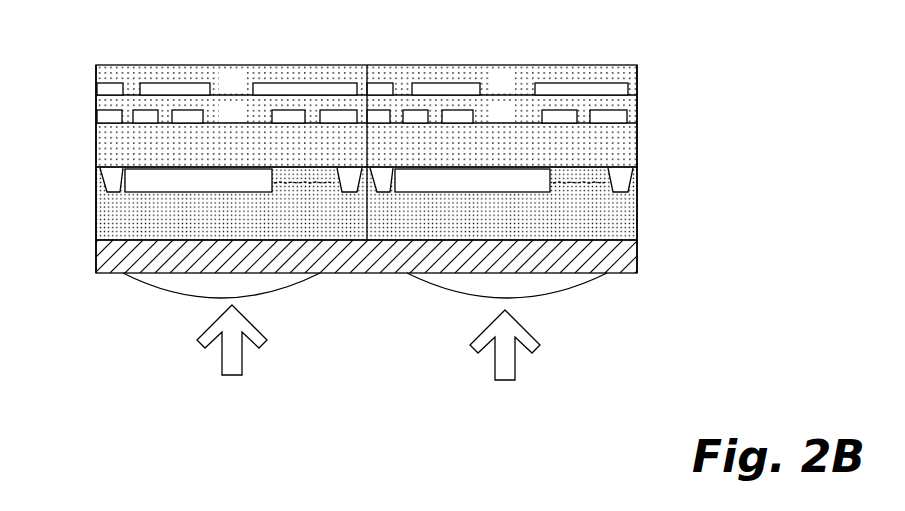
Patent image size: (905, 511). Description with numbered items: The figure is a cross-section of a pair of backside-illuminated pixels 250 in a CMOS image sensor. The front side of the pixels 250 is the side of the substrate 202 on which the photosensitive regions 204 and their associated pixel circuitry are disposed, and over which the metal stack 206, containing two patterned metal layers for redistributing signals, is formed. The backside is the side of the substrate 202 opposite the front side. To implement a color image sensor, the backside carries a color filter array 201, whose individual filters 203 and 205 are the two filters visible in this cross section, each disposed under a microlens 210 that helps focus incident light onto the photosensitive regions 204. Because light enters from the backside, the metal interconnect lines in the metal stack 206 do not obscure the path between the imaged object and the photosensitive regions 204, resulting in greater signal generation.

The backside-illuminated pixels 250 is at (399, 197).
The metal stack 206 is at (643, 67).
The substrate 202 is at (405, 203).
The photosensitive regions 204 is at (172, 188).
The color filter array 201 is at (643, 240).
The individual filter 203 is at (92, 273).
The individual filter 205 is at (618, 276).
The microlens 210 is at (208, 292).